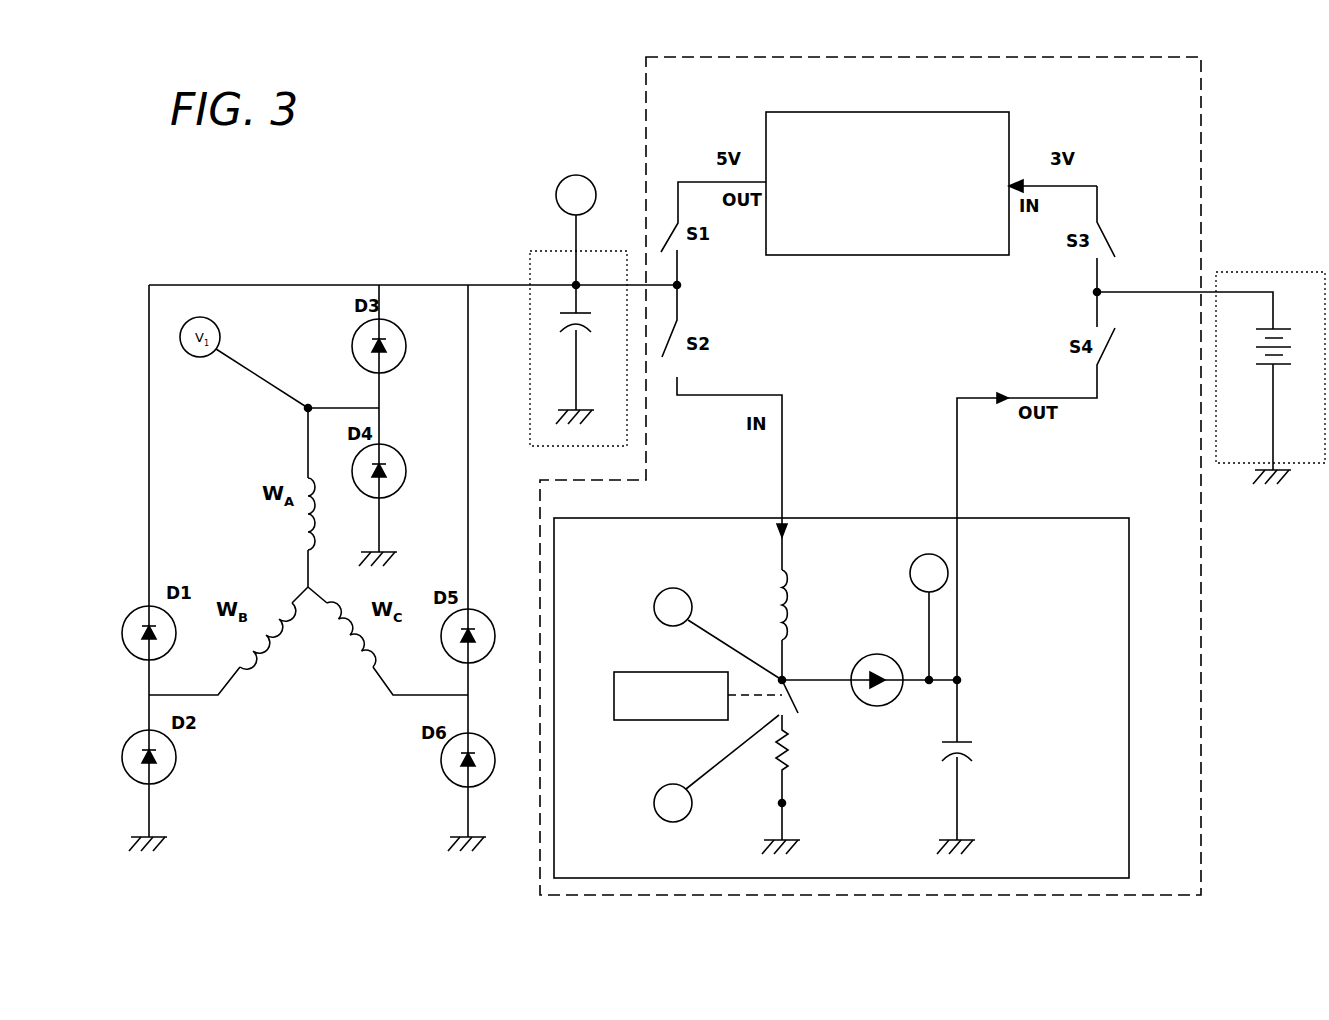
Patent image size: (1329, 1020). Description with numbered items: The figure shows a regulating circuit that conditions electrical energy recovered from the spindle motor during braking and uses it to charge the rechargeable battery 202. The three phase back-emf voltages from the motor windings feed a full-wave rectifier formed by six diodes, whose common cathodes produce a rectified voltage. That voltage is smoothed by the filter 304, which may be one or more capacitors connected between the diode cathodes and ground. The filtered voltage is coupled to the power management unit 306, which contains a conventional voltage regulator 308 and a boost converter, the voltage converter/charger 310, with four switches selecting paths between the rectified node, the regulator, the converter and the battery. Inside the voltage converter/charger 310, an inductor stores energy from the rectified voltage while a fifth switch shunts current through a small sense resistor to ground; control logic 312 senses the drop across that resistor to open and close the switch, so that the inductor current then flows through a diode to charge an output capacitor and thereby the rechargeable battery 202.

The rechargeable battery 202 is at (1272, 272).
The filter 304 is at (557, 251).
The power management unit 306 is at (645, 150).
The voltage regulator 308 is at (813, 255).
The voltage converter/charger 310 is at (1131, 690).
The control logic 312 is at (614, 690).